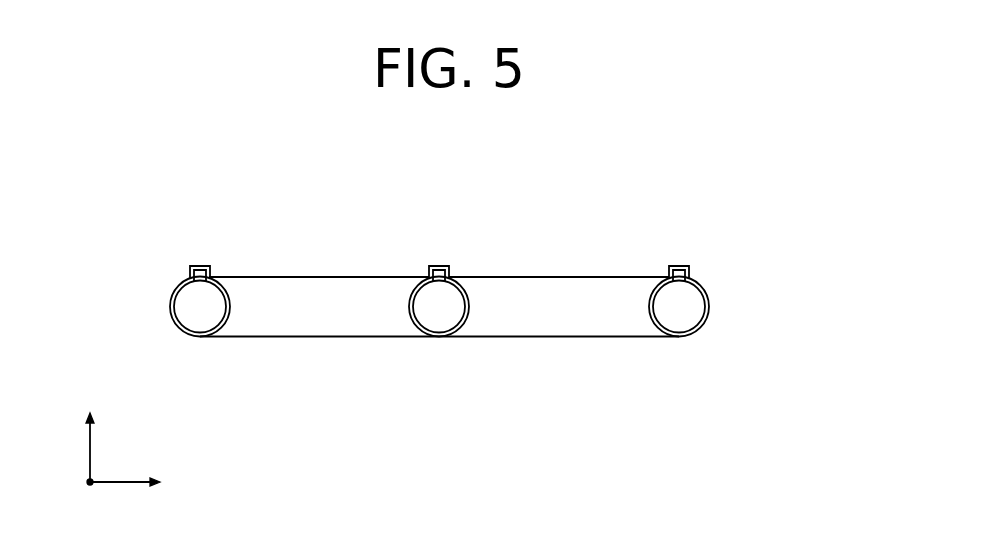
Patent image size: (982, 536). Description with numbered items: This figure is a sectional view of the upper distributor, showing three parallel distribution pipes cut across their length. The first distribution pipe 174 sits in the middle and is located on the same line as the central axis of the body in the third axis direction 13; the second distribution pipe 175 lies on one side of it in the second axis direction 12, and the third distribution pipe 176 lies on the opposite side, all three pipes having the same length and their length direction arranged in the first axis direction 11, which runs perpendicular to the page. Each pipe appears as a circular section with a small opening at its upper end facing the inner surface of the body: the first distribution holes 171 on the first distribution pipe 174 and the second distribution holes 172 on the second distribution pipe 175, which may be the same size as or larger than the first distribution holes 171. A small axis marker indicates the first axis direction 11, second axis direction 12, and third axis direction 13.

The first axis direction 11 is at (90, 500).
The second axis direction 12 is at (141, 483).
The third axis direction 13 is at (90, 430).
The first distribution holes 171 is at (437, 266).
The second distribution holes 172 is at (196, 266).
The first distribution pipe 174 is at (469, 303).
The second distribution pipe 175 is at (229, 302).
The third distribution pipe 176 is at (709, 303).